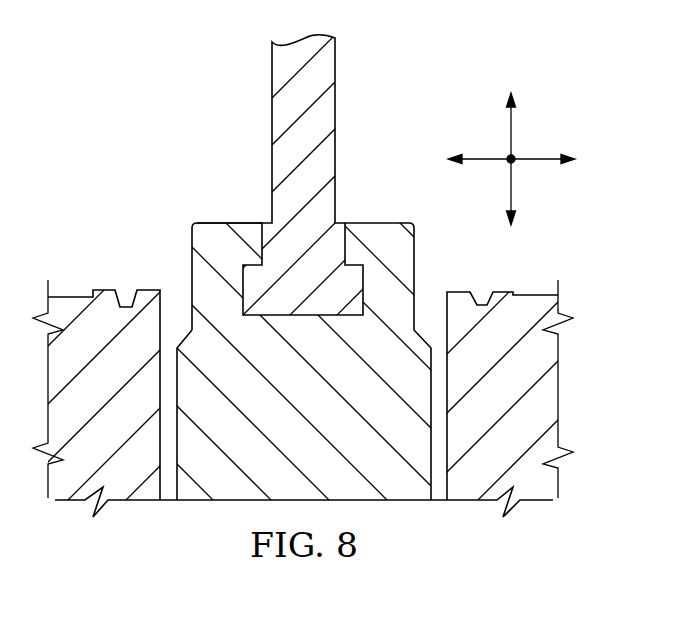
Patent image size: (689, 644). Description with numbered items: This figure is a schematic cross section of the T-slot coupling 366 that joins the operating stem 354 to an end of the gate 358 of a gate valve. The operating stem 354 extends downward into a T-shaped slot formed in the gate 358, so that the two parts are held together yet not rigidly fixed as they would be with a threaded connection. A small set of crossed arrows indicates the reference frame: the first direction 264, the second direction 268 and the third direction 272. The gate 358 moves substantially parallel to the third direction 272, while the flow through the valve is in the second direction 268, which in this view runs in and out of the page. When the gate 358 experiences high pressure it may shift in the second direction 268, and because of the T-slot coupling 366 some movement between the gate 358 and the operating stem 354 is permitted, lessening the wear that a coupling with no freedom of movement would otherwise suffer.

The operating stem 354 is at (336, 110).
The gate 358 is at (213, 210).
The T-slot coupling 366 is at (357, 202).
The first direction 264 is at (539, 162).
The second direction 268 is at (507, 165).
The third direction 272 is at (513, 143).